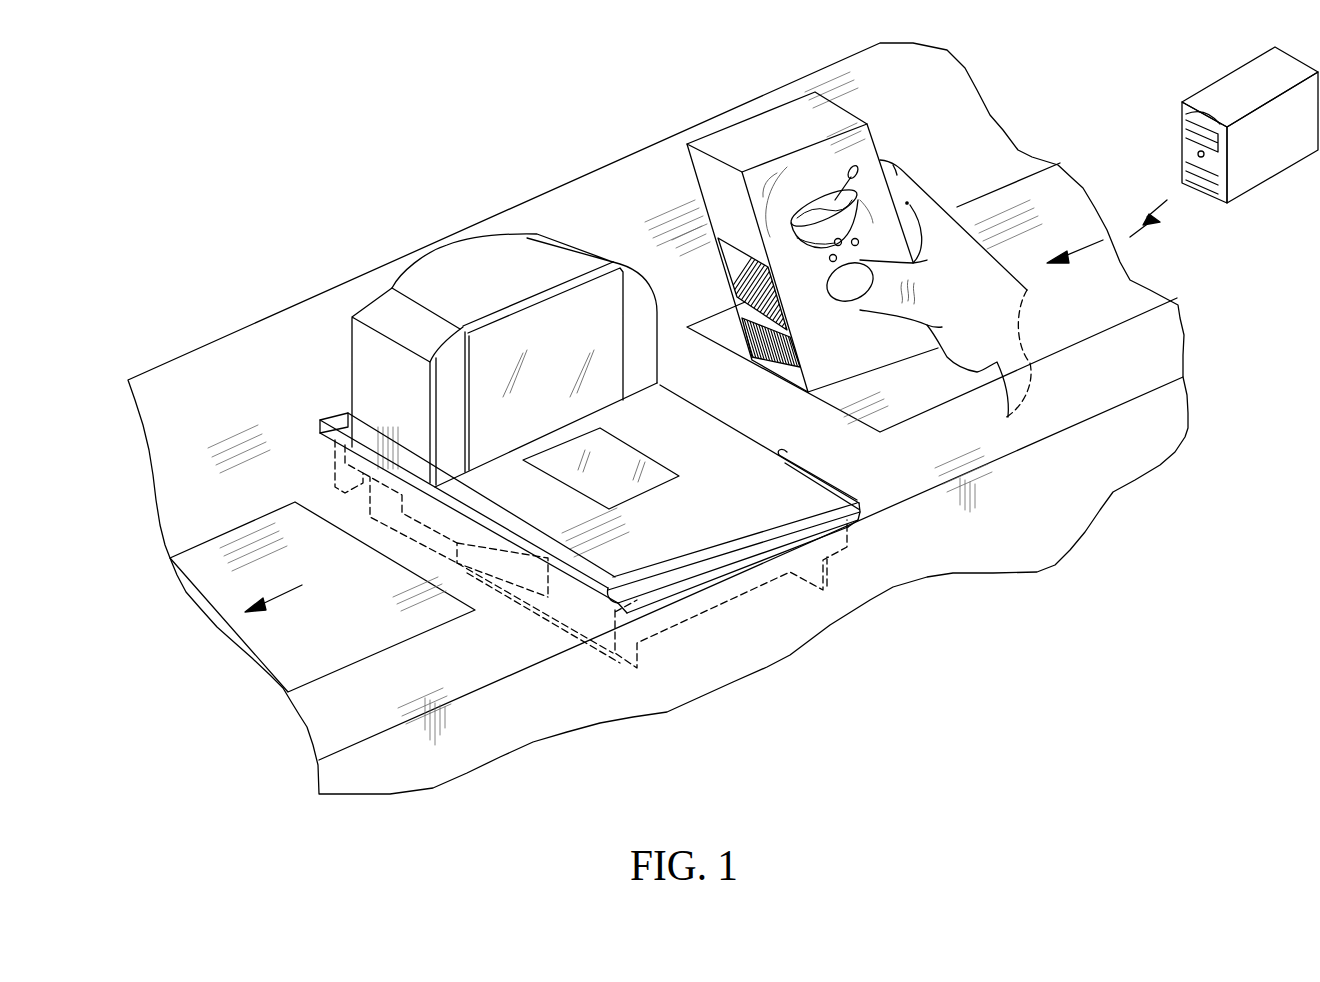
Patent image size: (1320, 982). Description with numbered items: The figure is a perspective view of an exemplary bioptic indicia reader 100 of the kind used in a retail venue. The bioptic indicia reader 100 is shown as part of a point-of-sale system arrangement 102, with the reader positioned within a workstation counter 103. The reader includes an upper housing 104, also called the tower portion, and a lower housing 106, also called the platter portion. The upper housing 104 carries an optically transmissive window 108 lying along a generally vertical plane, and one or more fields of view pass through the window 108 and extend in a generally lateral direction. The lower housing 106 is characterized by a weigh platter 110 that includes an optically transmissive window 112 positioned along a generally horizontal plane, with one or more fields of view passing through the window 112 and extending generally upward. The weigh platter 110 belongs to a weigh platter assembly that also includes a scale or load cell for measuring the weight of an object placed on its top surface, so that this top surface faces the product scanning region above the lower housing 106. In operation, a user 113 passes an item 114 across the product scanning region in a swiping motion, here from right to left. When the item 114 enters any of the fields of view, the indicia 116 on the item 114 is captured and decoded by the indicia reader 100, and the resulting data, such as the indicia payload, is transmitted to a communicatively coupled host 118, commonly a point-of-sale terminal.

The bioptic indicia reader 100 is at (200, 190).
The point-of-sale (POS) system arrangement 102 is at (565, 152).
The workstation counter 103 is at (222, 413).
The upper housing 104 is at (468, 260).
The lower housing 106 is at (560, 600).
The optically transmissive window 108 is at (527, 338).
The weigh platter 110 is at (590, 499).
The optically transmissive window 112 is at (580, 490).
The user 113 is at (993, 296).
The item 114 is at (800, 221).
The indicia 116 is at (803, 362).
The host 118 is at (1182, 140).